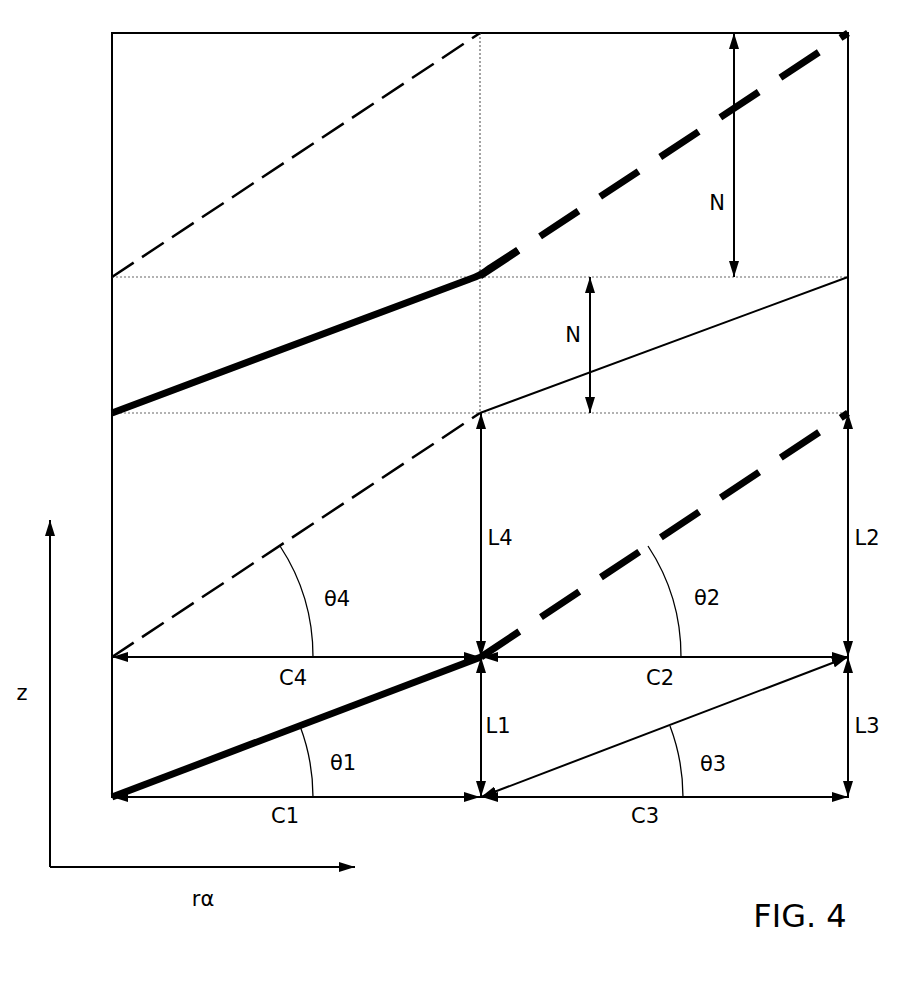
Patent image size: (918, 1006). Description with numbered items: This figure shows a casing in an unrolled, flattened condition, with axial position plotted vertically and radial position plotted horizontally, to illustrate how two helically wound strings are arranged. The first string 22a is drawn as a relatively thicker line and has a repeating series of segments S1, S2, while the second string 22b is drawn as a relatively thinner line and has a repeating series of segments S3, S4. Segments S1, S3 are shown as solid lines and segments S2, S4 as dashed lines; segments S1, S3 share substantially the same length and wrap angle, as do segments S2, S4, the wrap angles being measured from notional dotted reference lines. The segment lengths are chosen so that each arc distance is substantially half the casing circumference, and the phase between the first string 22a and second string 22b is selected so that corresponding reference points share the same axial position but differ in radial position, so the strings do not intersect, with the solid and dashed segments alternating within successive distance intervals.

The first string 22a is at (300, 343).
The second string 22b is at (367, 108).
The first segment S1 is at (233, 752).
The second segment S2 is at (716, 501).
The third segment S3 is at (747, 697).
The fourth segment S4 is at (243, 570).